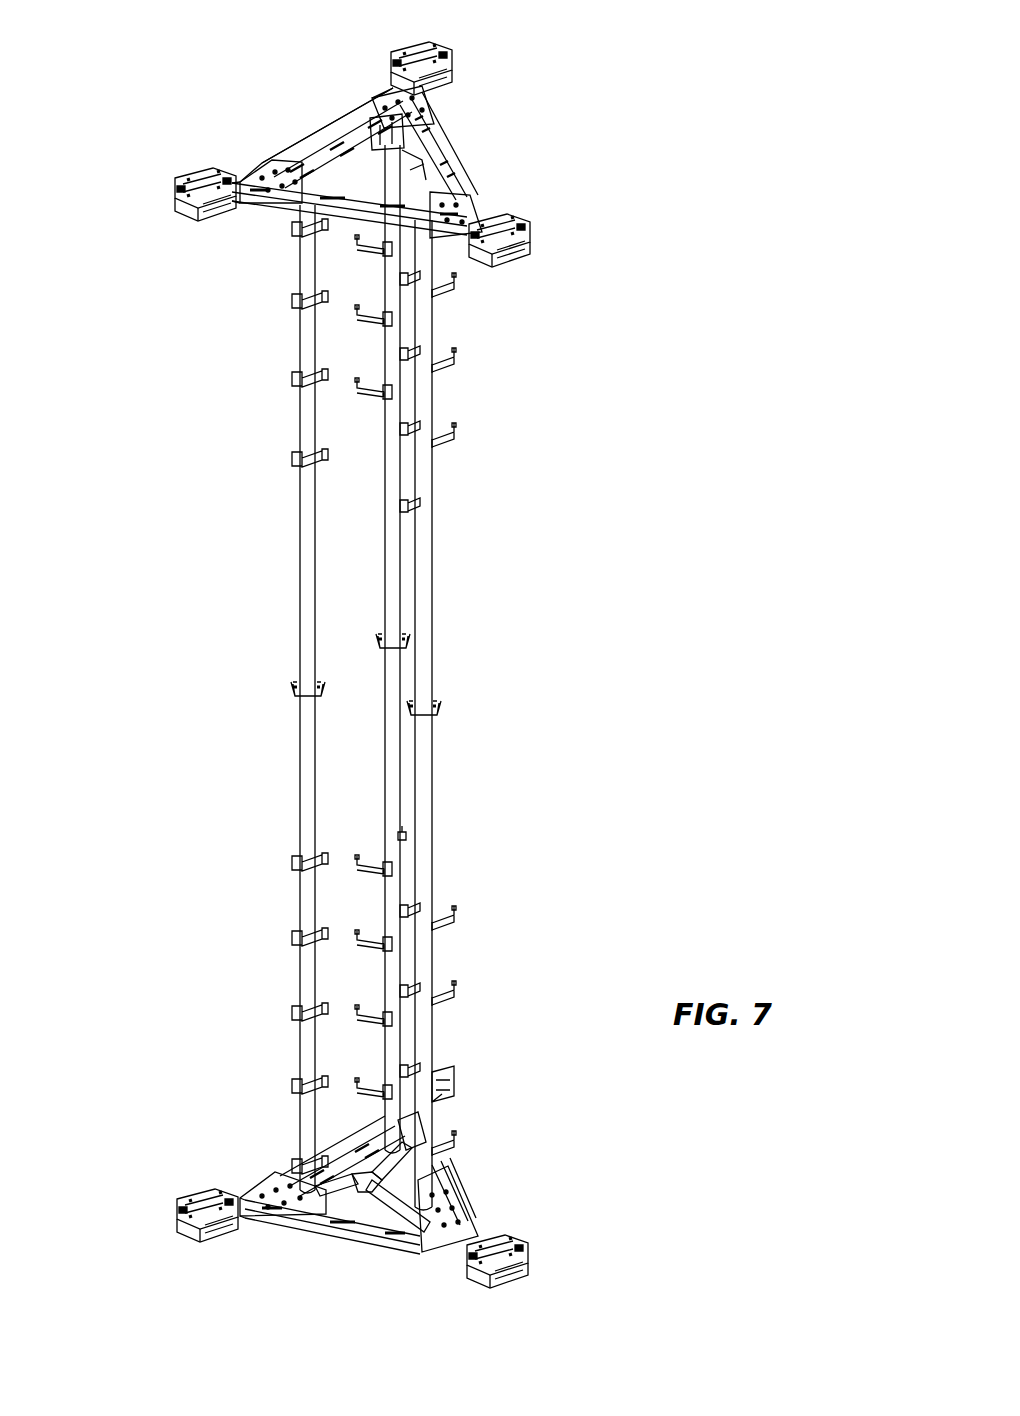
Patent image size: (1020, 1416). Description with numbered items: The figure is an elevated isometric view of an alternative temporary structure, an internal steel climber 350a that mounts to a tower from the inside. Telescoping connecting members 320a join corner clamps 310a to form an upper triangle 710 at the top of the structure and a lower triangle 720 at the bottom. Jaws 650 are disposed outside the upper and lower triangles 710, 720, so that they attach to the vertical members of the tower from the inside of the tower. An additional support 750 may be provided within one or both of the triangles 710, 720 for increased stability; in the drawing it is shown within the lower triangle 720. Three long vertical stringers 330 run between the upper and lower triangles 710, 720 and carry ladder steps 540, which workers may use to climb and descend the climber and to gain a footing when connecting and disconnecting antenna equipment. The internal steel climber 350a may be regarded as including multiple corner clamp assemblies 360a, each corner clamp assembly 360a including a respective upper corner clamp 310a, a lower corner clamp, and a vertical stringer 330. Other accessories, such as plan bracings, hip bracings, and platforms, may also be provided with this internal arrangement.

The jaws 650 is at (412, 50).
The upper triangle 710 is at (337, 158).
The telescoping connecting member 320a is at (335, 152).
The upper corner clamp 310a is at (217, 148).
The internal steel climber 350a is at (646, 144).
The vertical stringer 330 is at (300, 625).
The ladder step 540 is at (456, 436).
The corner clamp assembly 360a is at (155, 626).
The lower triangle 720 is at (335, 1168).
The additional support 750 is at (352, 1196).